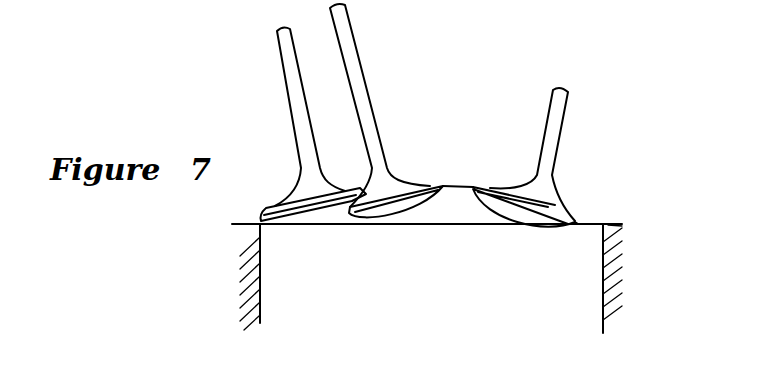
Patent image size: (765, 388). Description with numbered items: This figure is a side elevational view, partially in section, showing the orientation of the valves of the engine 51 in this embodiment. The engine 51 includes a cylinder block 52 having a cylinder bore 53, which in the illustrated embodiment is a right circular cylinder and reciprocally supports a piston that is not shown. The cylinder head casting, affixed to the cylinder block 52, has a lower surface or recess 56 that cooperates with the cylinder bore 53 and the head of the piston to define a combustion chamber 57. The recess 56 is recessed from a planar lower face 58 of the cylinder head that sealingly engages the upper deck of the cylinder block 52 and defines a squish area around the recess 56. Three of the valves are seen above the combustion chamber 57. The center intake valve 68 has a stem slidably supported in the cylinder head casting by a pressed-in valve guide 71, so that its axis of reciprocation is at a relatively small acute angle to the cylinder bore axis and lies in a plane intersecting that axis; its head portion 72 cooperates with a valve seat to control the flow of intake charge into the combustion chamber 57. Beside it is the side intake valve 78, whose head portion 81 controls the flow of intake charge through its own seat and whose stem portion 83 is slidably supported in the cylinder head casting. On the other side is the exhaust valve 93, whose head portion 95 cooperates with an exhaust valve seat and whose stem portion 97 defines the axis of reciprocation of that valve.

The engine 51 is at (222, 272).
The cylinder block 52 is at (636, 262).
The cylinder bore 53 is at (602, 280).
The cylinder head recess 56 is at (468, 202).
The combustion chamber 57 is at (430, 213).
The planar lower face 58 is at (455, 224).
The center intake valve 68 is at (277, 155).
The valve guide 71 is at (287, 77).
The head portion 72 is at (303, 224).
The side intake valve 78 is at (390, 147).
The head portion 81 is at (378, 213).
The stem portion 83 is at (367, 72).
The exhaust valve 93 is at (557, 143).
The head portion 95 is at (548, 212).
The stem portion 97 is at (569, 108).